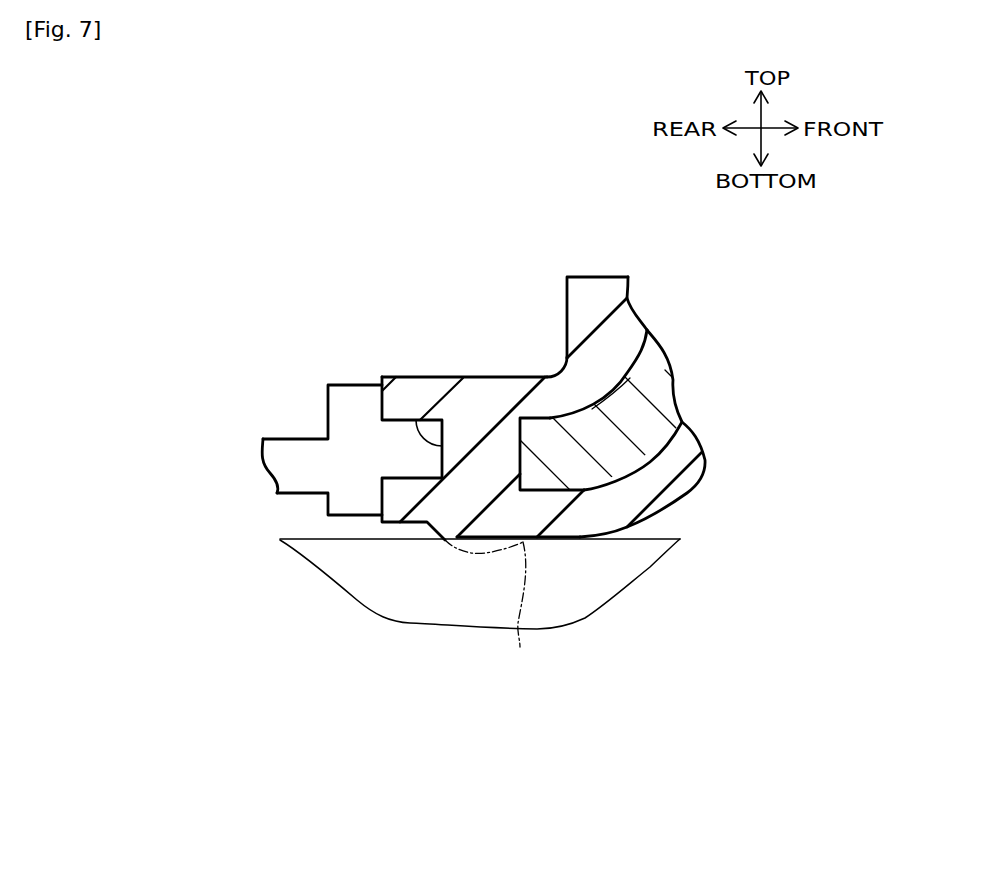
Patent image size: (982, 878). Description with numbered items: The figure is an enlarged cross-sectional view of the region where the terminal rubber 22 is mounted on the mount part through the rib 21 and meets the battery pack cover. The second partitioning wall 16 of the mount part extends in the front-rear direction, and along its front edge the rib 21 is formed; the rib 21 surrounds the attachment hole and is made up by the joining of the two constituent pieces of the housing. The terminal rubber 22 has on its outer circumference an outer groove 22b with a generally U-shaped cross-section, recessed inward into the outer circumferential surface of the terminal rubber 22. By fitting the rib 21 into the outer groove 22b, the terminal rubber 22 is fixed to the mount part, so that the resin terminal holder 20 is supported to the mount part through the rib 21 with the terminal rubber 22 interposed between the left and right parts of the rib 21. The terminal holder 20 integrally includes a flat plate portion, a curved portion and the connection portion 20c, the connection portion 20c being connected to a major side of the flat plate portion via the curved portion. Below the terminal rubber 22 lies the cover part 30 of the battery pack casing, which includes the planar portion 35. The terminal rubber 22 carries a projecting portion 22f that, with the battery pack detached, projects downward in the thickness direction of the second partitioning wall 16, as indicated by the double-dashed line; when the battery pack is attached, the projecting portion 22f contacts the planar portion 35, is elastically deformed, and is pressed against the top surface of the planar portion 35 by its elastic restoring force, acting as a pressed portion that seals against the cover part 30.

The second partitioning wall 16 is at (292, 448).
The terminal holder 20 is at (684, 385).
The connection portion 20c is at (660, 348).
The rib 21 is at (402, 428).
The terminal rubber 22 is at (499, 366).
The outer groove 22b is at (420, 427).
The projecting portion 22f is at (495, 611).
The cover part 30 is at (475, 648).
The planar portion 35 is at (312, 539).